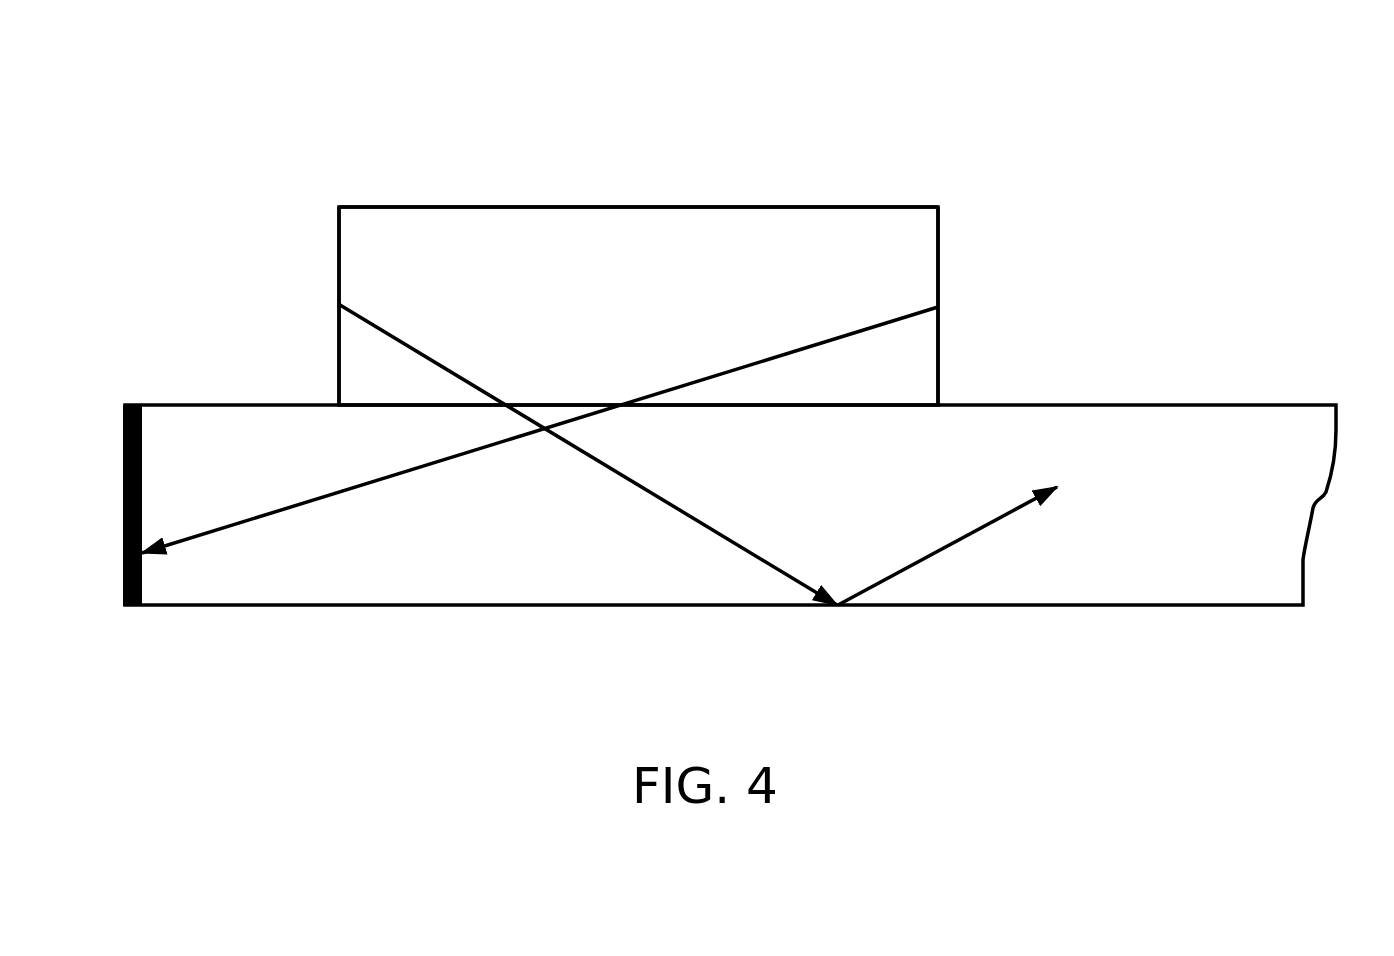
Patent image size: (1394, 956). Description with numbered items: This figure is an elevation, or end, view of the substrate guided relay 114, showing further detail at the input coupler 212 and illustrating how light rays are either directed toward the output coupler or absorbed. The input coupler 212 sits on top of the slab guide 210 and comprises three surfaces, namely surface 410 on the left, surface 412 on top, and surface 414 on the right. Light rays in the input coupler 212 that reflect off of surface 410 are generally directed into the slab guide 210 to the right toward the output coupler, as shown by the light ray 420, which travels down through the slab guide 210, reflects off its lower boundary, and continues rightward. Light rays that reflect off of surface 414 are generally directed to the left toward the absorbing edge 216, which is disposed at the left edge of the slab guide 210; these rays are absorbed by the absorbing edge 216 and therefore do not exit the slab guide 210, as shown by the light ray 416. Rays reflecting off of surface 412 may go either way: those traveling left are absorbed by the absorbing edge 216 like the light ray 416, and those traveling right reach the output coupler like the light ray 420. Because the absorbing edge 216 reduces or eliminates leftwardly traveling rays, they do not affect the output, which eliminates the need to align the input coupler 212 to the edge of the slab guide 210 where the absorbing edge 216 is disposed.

The substrate guided relay 114 is at (1200, 193).
The slab guide 210 is at (1252, 405).
The input coupler 212 is at (838, 207).
The absorbing edge 216 is at (123, 455).
The surface 410 is at (339, 224).
The surface 412 is at (640, 207).
The surface 414 is at (938, 224).
The light ray 416 is at (348, 492).
The light ray 420 is at (705, 518).